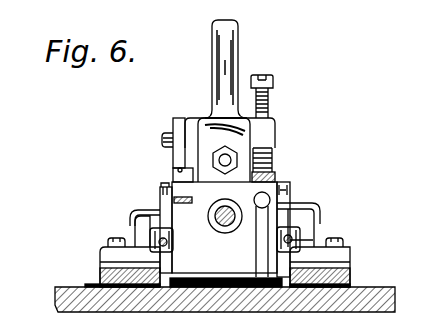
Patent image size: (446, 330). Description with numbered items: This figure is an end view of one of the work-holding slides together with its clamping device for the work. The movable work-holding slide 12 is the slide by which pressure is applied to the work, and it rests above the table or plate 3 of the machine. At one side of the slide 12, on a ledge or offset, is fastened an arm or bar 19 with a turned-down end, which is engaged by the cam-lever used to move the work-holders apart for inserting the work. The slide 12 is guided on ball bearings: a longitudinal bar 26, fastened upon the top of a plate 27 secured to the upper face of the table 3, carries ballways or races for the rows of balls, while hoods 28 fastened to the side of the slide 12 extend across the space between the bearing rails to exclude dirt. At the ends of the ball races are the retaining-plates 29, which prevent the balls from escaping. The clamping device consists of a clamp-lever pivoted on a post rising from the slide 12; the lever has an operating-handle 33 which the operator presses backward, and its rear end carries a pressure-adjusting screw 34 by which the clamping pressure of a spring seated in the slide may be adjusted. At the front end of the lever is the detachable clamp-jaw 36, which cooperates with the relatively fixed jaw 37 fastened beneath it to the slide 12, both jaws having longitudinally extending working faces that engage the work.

The table or plate 3 is at (378, 290).
The work-holding slide 12 is at (211, 216).
The arm or bar 19 is at (176, 200).
The longitudinal bar 26 is at (312, 233).
The plate 27 is at (100, 272).
The hood 28 is at (131, 214).
The retaining-plate 29 is at (170, 250).
The operating-handle 33 is at (212, 75).
The pressure-adjusting screw 34 is at (272, 100).
The clamp-jaw 36 is at (175, 119).
The fixed jaw 37 is at (173, 173).